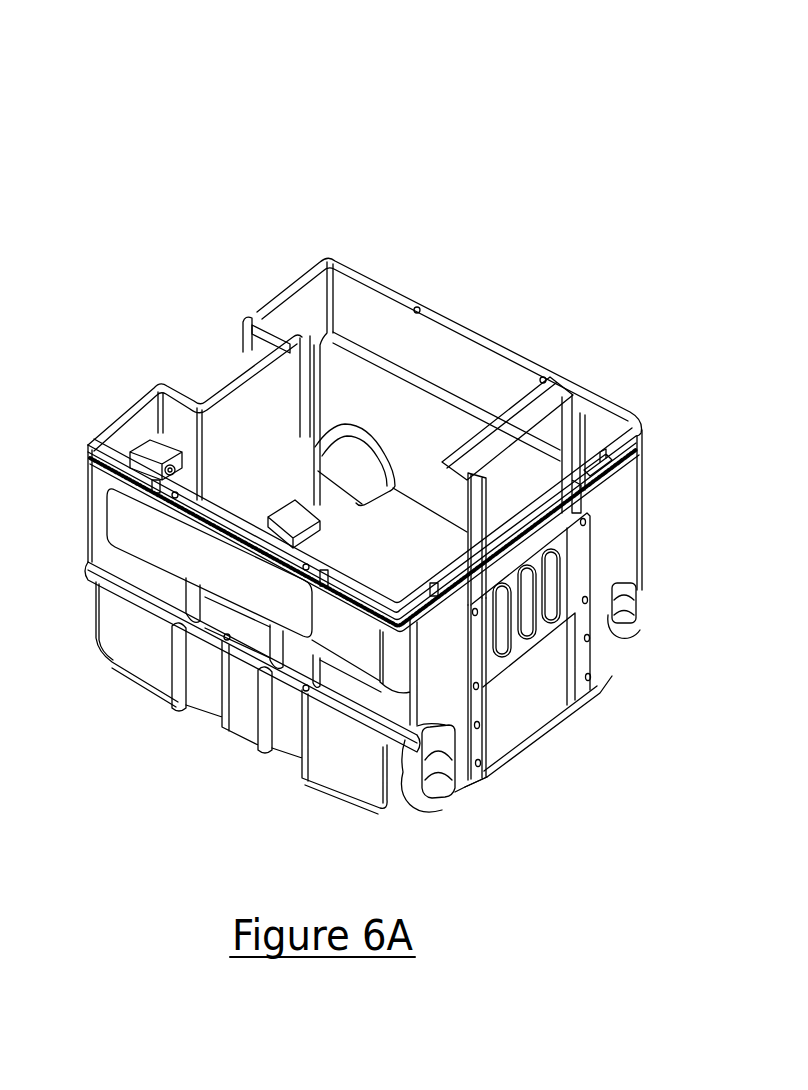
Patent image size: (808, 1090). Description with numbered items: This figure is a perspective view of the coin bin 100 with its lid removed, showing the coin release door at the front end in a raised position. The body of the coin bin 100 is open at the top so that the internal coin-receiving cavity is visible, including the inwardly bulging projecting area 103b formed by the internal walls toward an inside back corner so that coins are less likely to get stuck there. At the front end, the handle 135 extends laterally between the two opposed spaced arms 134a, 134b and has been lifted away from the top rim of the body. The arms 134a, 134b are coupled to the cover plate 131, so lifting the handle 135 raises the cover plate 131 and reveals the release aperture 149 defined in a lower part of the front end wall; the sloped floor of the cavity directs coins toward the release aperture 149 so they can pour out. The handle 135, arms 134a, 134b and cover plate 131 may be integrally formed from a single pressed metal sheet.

The coin bin 100 is at (520, 180).
The projecting area 103b is at (362, 456).
The handle 135 is at (527, 410).
The arm 134a is at (567, 441).
The arm 134b is at (484, 516).
The cover plate 131 is at (541, 620).
The release aperture 149 is at (520, 695).